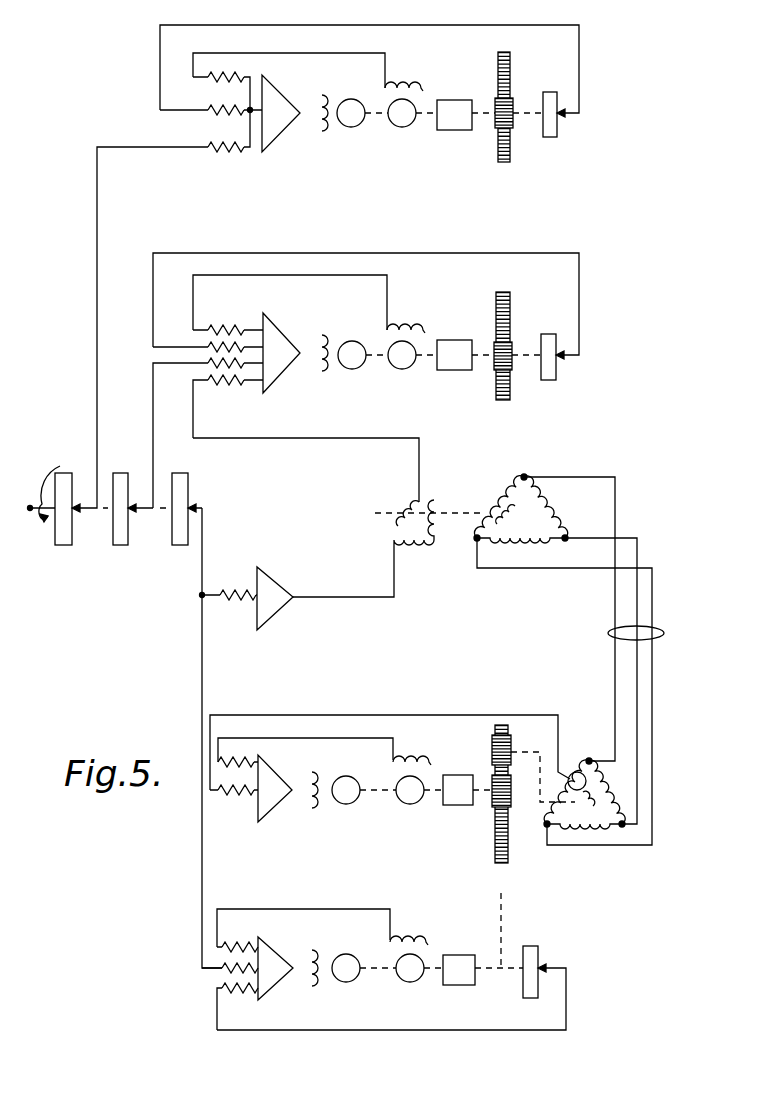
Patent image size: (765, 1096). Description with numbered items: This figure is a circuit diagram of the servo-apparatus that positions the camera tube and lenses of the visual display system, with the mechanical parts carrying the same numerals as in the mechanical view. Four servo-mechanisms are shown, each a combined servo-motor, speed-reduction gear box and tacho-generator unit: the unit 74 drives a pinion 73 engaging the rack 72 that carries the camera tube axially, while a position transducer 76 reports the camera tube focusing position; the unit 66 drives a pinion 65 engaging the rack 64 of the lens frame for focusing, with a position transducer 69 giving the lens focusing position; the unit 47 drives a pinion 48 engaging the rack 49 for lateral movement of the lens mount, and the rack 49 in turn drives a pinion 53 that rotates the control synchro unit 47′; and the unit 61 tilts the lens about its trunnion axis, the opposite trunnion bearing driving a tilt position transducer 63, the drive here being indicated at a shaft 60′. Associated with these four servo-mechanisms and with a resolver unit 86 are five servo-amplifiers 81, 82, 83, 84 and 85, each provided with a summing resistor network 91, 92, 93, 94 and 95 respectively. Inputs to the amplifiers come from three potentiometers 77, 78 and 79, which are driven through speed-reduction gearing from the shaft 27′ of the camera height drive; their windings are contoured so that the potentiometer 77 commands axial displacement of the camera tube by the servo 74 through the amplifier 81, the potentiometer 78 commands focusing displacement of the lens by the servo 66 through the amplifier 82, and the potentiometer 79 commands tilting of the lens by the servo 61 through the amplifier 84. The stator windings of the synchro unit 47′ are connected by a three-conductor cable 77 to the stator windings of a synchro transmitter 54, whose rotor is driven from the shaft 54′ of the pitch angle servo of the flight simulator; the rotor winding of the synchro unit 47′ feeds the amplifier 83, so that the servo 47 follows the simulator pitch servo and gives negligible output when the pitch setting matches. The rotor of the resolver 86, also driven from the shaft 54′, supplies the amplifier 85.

The shaft of the camera height drive 27′ is at (90, 440).
The combined servo motor, speed-reduction gear box and tacho-generator unit 47 is at (592, 686).
The control synchro unit 47′ is at (601, 735).
The pinion 48 is at (511, 801).
The rack 49 is at (494, 830).
The pinion 53 is at (491, 748).
The synchro transmitter 54 is at (576, 464).
The shaft of the pitch angle servo 54′ is at (490, 474).
The drive shaft 60′ is at (498, 911).
The combined servo-motor, speed-reduction gear box and tacho-generator unit 61 is at (558, 907).
The tilt position transducer 63 is at (540, 948).
The rack 64 is at (510, 300).
The pinion 65 is at (509, 372).
The combined servo-motor, speed-reduction gear box and tacho-generator unit 66 is at (552, 240).
The position transducer 69 is at (556, 378).
The rack 72 is at (508, 62).
The pinion 73 is at (508, 130).
The combined servo-motor, speed reduction gear box and tacho-generator unit 74 is at (612, 54).
The position transducer 76 is at (556, 132).
The potentiometer 77 is at (64, 545).
The potentiometer 78 is at (120, 545).
The potentiometer 79 is at (180, 545).
The servo-amplifier 81 is at (271, 128).
The servo-amplifier 82 is at (274, 372).
The servo-amplifier 83 is at (270, 806).
The servo-amplifier 84 is at (269, 957).
The servo-amplifier 85 is at (274, 592).
The resolver unit 86 is at (408, 506).
The summing resistor network 91 is at (240, 182).
The summing resistor network 92 is at (238, 416).
The summing resistor network 93 is at (243, 842).
The summing resistor network 94 is at (258, 1022).
The summing resistor network 95 is at (242, 592).